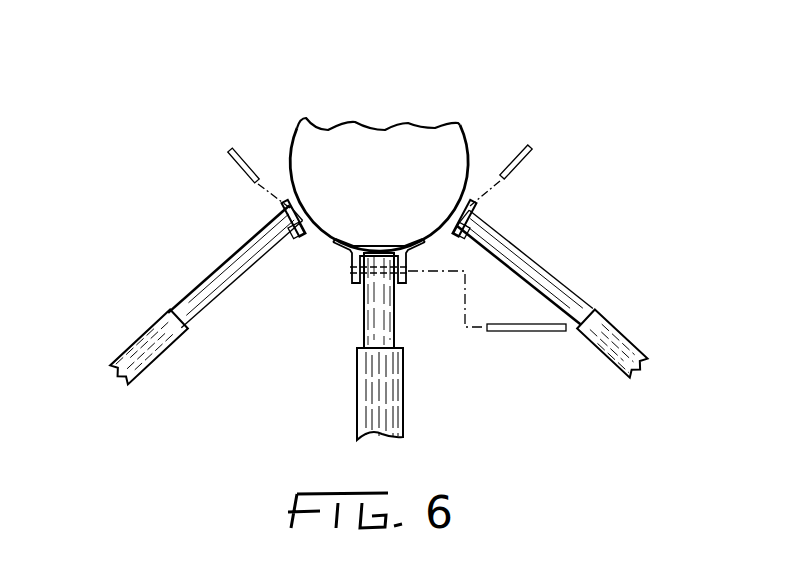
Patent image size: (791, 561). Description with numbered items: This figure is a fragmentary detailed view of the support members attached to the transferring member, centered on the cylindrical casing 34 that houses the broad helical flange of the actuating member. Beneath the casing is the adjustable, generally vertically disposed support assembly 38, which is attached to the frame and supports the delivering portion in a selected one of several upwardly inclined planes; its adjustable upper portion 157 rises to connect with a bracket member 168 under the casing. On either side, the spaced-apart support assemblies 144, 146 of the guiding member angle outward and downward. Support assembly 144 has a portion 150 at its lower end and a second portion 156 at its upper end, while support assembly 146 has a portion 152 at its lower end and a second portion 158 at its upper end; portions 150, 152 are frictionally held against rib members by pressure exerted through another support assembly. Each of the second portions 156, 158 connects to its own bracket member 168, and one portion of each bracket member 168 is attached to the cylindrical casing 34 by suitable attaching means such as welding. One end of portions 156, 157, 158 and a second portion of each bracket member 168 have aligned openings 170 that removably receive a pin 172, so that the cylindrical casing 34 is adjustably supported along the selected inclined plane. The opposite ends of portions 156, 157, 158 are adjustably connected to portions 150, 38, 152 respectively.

The cylindrical casing 34 is at (303, 138).
The support assembly 38 is at (365, 400).
The support assembly 144 is at (198, 334).
The support assembly 146 is at (605, 261).
The portion 150 is at (158, 331).
The portion 152 is at (618, 335).
The second portion 156 is at (226, 267).
The adjustable upper portion 157 is at (373, 326).
The second portion 158 is at (530, 268).
The bracket member 168 is at (286, 200).
The aligned openings 170 is at (298, 226).
The pin 172 is at (232, 154).